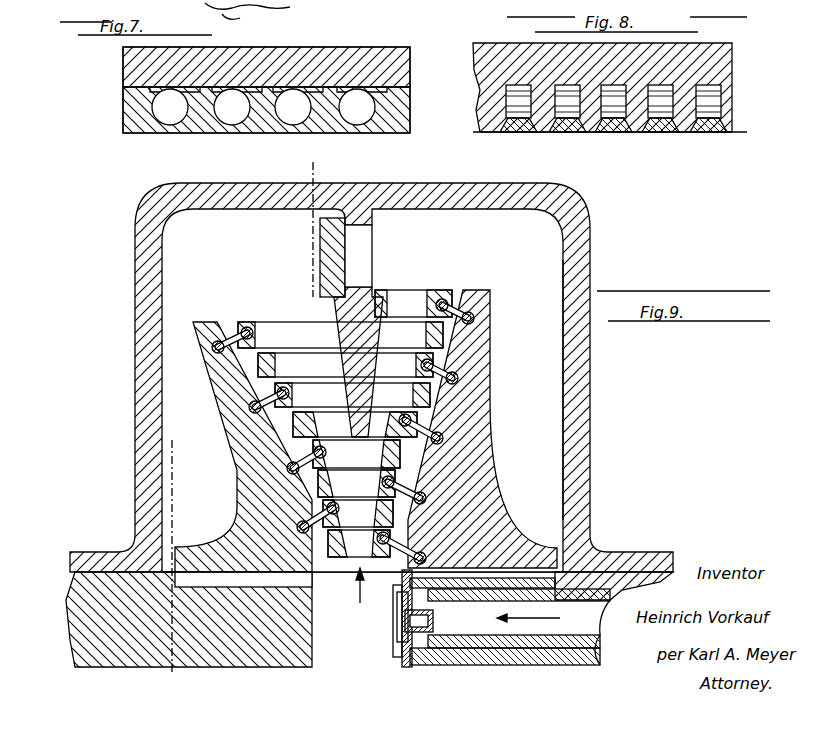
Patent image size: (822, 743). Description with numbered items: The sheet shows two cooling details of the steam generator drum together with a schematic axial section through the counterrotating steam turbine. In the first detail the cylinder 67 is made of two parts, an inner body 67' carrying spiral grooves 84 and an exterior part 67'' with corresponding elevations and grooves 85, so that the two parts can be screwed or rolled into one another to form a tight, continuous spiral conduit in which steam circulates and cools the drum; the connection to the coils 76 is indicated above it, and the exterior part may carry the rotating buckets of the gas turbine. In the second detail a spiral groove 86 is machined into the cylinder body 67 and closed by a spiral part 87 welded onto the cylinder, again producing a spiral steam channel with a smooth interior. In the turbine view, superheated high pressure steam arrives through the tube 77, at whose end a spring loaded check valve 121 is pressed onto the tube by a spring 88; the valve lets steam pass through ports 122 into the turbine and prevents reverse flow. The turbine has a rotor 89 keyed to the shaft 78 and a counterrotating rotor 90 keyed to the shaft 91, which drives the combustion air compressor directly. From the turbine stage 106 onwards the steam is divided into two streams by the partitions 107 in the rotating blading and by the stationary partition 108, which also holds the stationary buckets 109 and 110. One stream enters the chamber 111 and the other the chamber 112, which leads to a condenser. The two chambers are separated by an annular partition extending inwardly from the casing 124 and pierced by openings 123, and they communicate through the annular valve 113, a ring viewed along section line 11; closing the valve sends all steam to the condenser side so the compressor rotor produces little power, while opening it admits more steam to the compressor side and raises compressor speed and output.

In FIG. 7, the cylinder 67 is at (241, 90).
In FIG. 8, the cylinder 67 is at (623, 87).
In FIG. 7, the inner drum part 67' is at (283, 108).
In FIG. 7, the exterior drum part 67'' is at (266, 52).
In FIG. 7, the leads to coils 76 is at (260, 14).
In FIG. 7, the spiral grooves 84 is at (358, 127).
In FIG. 7, the elevations and grooves 85 is at (375, 72).
In FIG. 8, the spiral groove 86 is at (712, 108).
In FIG. 8, the spiral part 87 is at (656, 132).
In FIG. 9, the casing 124 is at (300, 169).
In FIG. 9, the section line 11 is at (313, 170).
In FIG. 9, the chamber 111 is at (362, 390).
In FIG. 9, the chamber 112 is at (525, 382).
In FIG. 9, the annular valve 113 is at (330, 250).
In FIG. 9, the openings 123 is at (362, 237).
In FIG. 9, the stationary partition 108 is at (373, 293).
In FIG. 9, the stationary buckets 109 is at (410, 342).
In FIG. 9, the stationary buckets 110 is at (288, 362).
In FIG. 9, the partitions 107 is at (340, 400).
In FIG. 9, the rotor 89 is at (482, 445).
In FIG. 9, the turbine stage 106 is at (322, 438).
In FIG. 9, the counterrotating rotor 90 is at (258, 483).
In FIG. 9, the spring 88 is at (404, 618).
In FIG. 9, the spring loaded check valve 121 is at (433, 619).
In FIG. 9, the ports 122 is at (405, 658).
In FIG. 9, the shaft 78 is at (505, 655).
In FIG. 9, the tube 77 is at (565, 622).
In FIG. 9, the shaft 91 is at (255, 640).